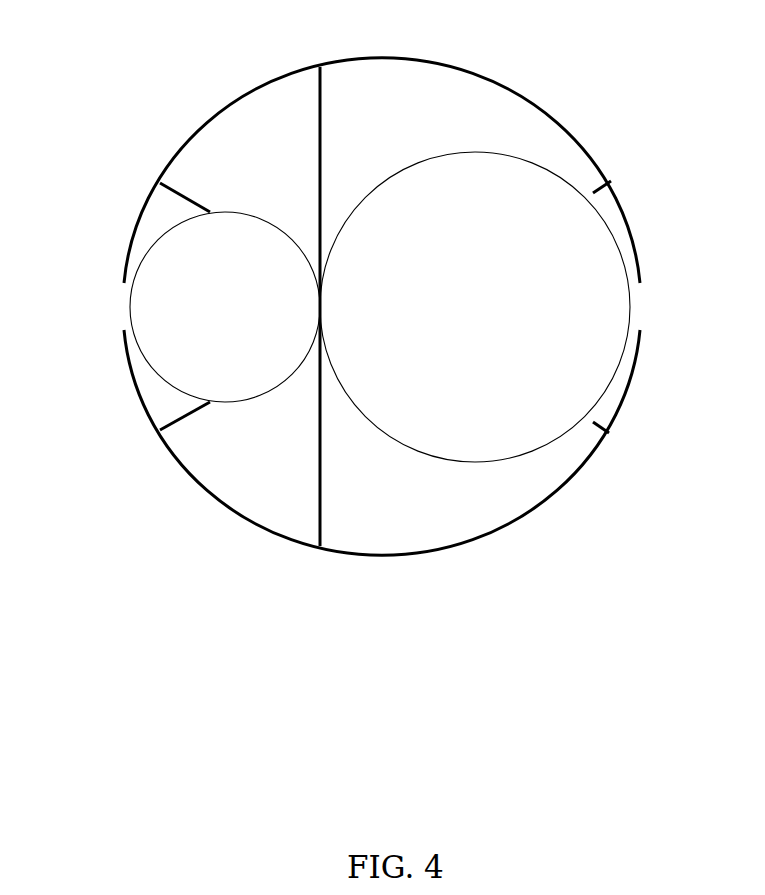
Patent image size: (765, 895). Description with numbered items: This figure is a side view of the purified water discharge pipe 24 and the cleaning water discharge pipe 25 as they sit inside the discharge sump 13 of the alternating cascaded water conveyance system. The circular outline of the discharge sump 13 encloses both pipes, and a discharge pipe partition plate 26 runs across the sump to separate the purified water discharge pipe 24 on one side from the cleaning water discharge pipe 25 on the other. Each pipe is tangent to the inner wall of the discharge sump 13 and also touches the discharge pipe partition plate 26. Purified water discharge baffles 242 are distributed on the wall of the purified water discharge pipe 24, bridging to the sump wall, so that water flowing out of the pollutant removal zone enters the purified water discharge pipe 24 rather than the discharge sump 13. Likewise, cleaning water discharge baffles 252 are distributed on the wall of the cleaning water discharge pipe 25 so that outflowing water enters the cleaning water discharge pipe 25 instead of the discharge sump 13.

The discharge sump 13 is at (517, 93).
The discharge pipe partition plate 26 is at (320, 148).
The cleaning water discharge pipe 25 is at (212, 308).
The purified water discharge pipe 24 is at (545, 368).
The cleaning water discharge baffle 252 is at (187, 193).
The purified water discharge baffle 242 is at (602, 177).